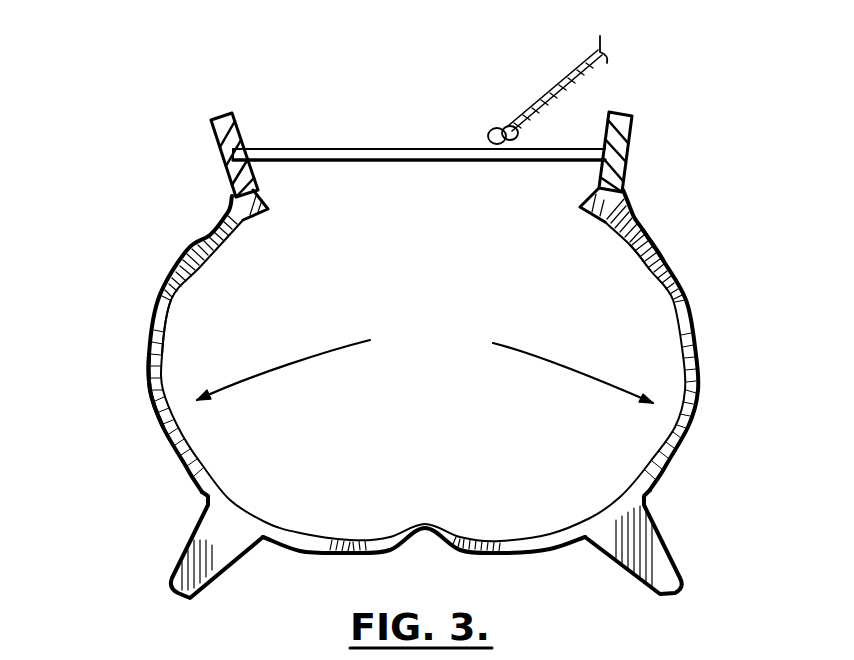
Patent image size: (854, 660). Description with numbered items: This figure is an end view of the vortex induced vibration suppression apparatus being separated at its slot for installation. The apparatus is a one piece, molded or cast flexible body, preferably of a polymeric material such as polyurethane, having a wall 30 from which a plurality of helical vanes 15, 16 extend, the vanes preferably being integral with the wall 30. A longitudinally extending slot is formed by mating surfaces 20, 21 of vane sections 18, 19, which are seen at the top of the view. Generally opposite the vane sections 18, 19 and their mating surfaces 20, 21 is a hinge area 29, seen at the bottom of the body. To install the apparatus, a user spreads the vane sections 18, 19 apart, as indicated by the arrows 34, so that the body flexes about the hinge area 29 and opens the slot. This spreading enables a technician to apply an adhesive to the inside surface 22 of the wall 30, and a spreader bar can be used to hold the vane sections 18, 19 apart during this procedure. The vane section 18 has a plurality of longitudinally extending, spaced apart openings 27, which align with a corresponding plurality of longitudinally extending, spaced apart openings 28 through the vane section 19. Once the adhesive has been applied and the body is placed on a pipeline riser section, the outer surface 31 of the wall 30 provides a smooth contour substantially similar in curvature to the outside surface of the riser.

The helical vane 15 is at (177, 595).
The helical vane 16 is at (663, 520).
The vane section 18 is at (222, 118).
The vane section 19 is at (633, 117).
The mating surface 20 is at (238, 118).
The mating surface 21 is at (610, 112).
The inside surface 22 is at (168, 343).
The openings 27 is at (216, 167).
The openings 28 is at (637, 160).
The hinge area 29 is at (428, 527).
The wall 30 is at (173, 290).
The outer surface 31 is at (150, 392).
The arrows 34 is at (330, 352).